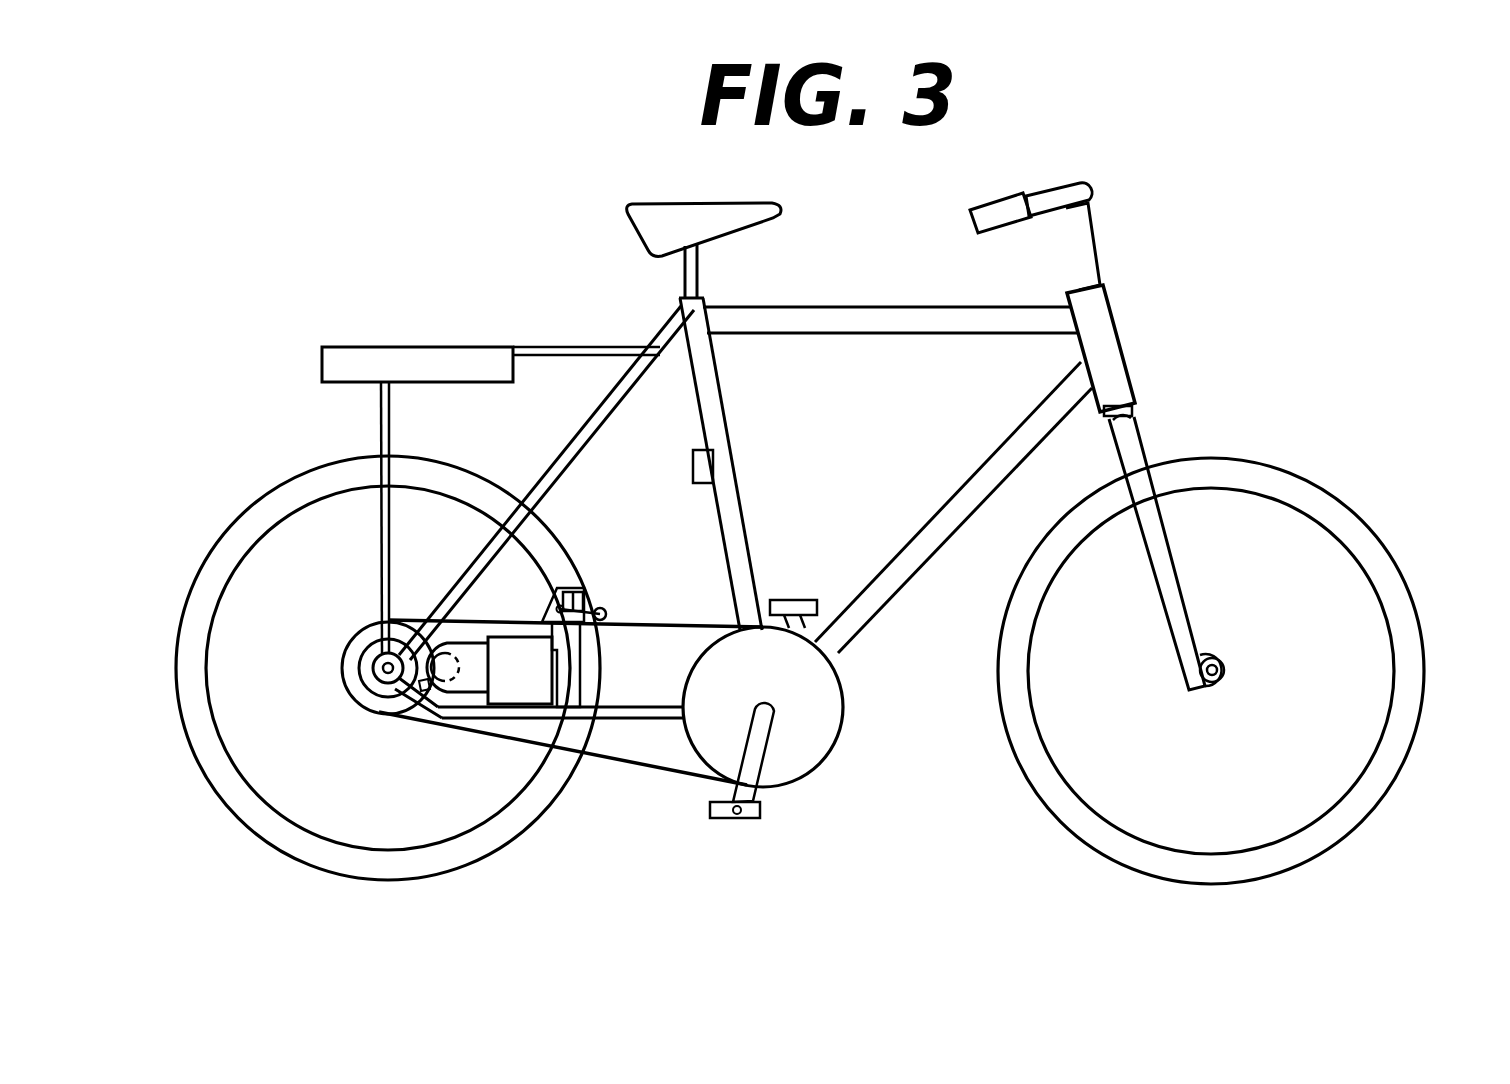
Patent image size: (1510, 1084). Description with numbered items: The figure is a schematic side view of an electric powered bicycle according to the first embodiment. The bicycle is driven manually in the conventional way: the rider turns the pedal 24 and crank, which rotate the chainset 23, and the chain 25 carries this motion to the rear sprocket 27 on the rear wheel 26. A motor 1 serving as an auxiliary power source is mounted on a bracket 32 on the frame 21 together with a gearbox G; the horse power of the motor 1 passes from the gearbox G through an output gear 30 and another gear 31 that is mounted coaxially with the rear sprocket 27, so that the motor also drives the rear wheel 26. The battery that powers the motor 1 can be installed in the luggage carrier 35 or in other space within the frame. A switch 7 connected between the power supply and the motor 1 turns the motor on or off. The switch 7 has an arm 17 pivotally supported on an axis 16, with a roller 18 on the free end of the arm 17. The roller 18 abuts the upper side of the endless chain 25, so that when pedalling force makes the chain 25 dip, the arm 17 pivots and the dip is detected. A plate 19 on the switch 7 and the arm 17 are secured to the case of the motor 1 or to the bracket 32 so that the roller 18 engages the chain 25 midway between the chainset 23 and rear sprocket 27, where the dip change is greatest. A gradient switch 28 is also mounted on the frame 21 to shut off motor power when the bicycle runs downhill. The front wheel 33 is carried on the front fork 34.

The motor 1 is at (518, 680).
The gearbox G is at (473, 680).
The switch 7 is at (572, 588).
The axis 16 is at (563, 612).
The arm 17 is at (592, 608).
The roller 18 is at (607, 613).
The plate 19 is at (570, 637).
The frame 21 is at (582, 715).
The chainset 23 is at (825, 708).
The pedal 24 is at (750, 823).
The chain 25 is at (663, 768).
The rear wheel 26 is at (262, 522).
The rear sprocket 27 is at (367, 640).
The gradient switch 28 is at (703, 465).
The output gear 30 is at (400, 713).
The gear 31 is at (368, 669).
The bracket 32 is at (527, 702).
The front wheel 33 is at (1412, 643).
The front fork 34 is at (1140, 490).
The luggage carrier 35 is at (418, 362).